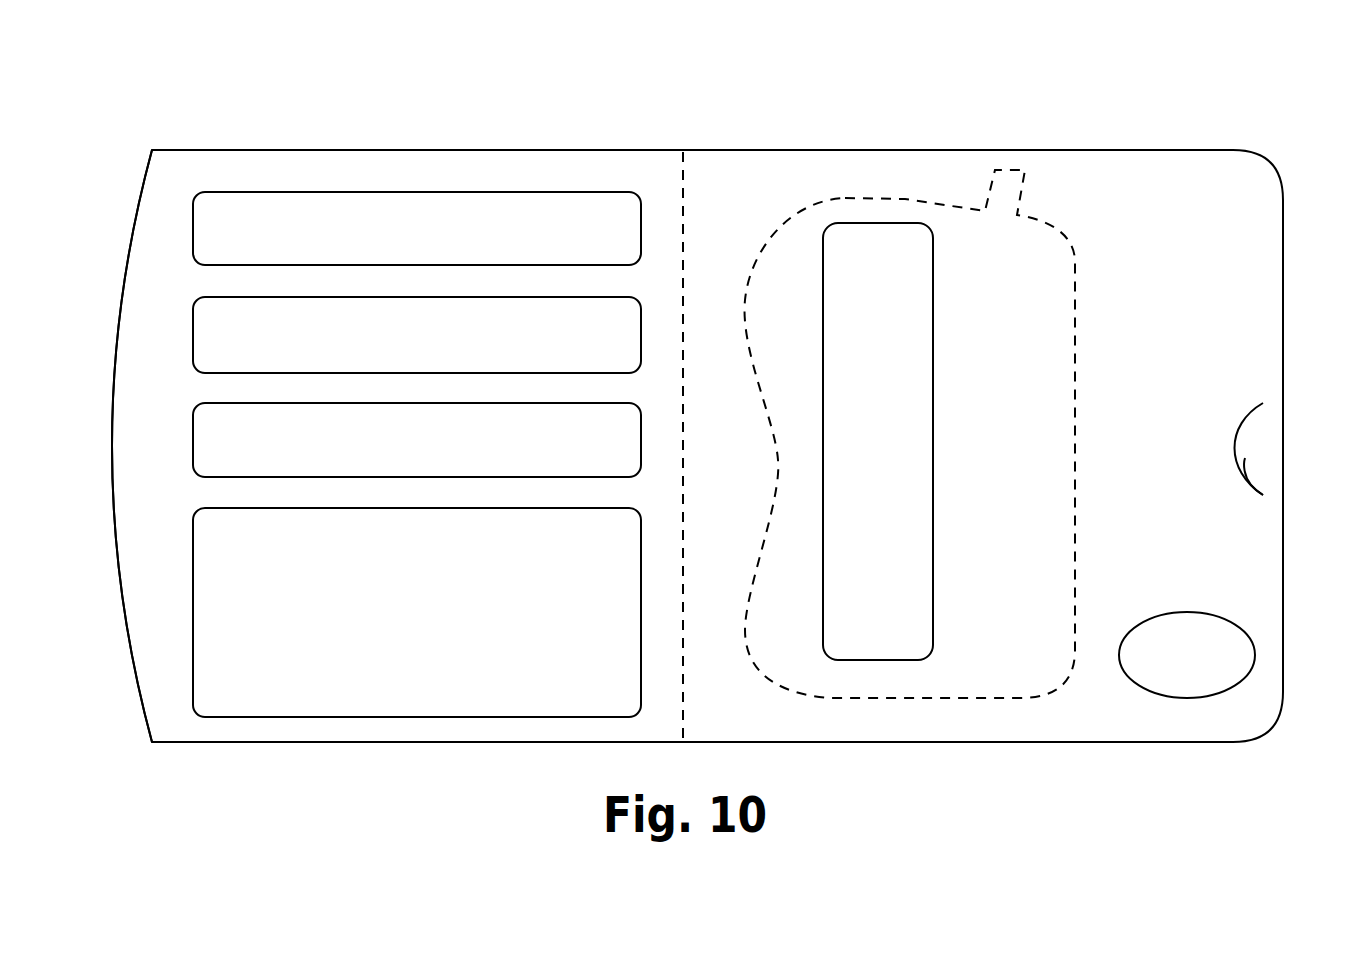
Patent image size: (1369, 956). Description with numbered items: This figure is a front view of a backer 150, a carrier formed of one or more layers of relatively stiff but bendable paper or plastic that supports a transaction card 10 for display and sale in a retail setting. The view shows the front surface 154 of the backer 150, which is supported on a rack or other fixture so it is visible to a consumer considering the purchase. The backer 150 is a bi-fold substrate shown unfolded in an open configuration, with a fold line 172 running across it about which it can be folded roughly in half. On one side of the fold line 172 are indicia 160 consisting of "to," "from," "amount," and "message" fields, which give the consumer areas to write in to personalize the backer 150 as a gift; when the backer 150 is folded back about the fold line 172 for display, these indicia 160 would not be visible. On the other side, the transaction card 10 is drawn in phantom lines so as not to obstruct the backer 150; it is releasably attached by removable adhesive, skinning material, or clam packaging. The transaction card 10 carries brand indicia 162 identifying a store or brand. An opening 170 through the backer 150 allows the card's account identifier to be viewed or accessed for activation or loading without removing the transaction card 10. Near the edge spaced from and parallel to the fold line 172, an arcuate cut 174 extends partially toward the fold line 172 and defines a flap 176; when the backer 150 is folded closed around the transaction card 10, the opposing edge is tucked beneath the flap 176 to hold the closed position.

The backer 150 is at (183, 124).
The front surface 154 is at (163, 507).
The indicia 160 is at (418, 220).
The fold line 172 is at (684, 190).
The transaction card 10 is at (945, 200).
The opening 170 is at (930, 600).
The cut 174 is at (1253, 405).
The flap 176 is at (1245, 458).
The brand indicia 162 is at (1235, 658).